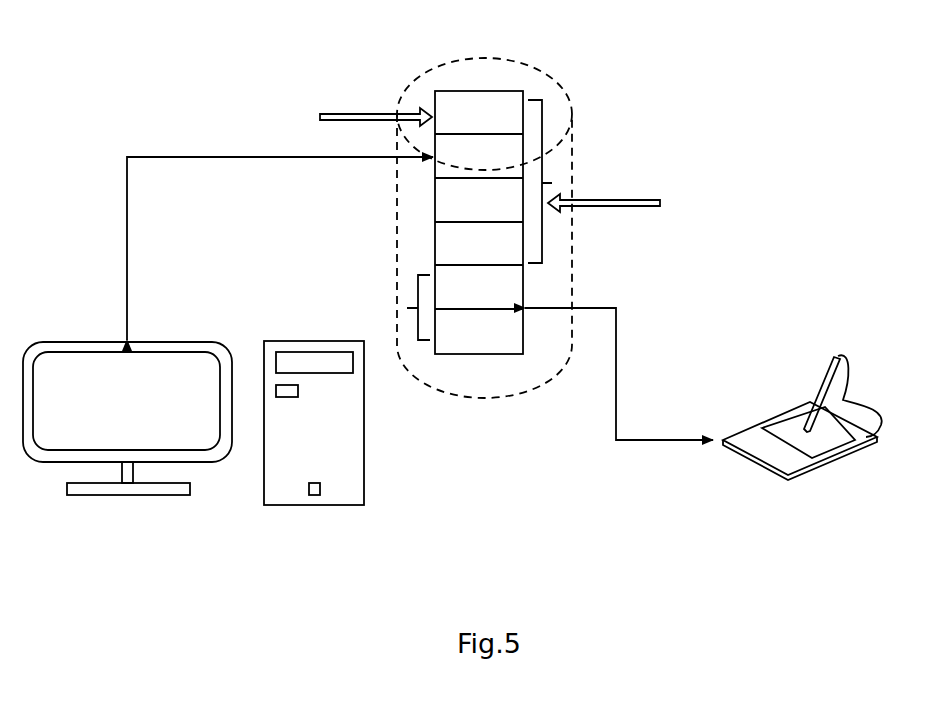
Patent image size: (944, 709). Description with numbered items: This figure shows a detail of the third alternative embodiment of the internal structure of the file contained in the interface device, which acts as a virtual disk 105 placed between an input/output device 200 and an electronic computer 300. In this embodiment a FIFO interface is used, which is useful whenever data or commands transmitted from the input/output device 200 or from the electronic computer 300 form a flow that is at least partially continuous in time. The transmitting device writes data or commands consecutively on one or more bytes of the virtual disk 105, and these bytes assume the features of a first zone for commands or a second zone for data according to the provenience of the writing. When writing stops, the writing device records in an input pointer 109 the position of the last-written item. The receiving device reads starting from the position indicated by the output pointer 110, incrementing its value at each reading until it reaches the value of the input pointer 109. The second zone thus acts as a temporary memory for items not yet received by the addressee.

The virtual disk 105 is at (395, 104).
The input pointer 109 is at (346, 118).
The output pointer 110 is at (632, 205).
The electronic computer 300 is at (282, 462).
The input/output device 200 is at (797, 453).